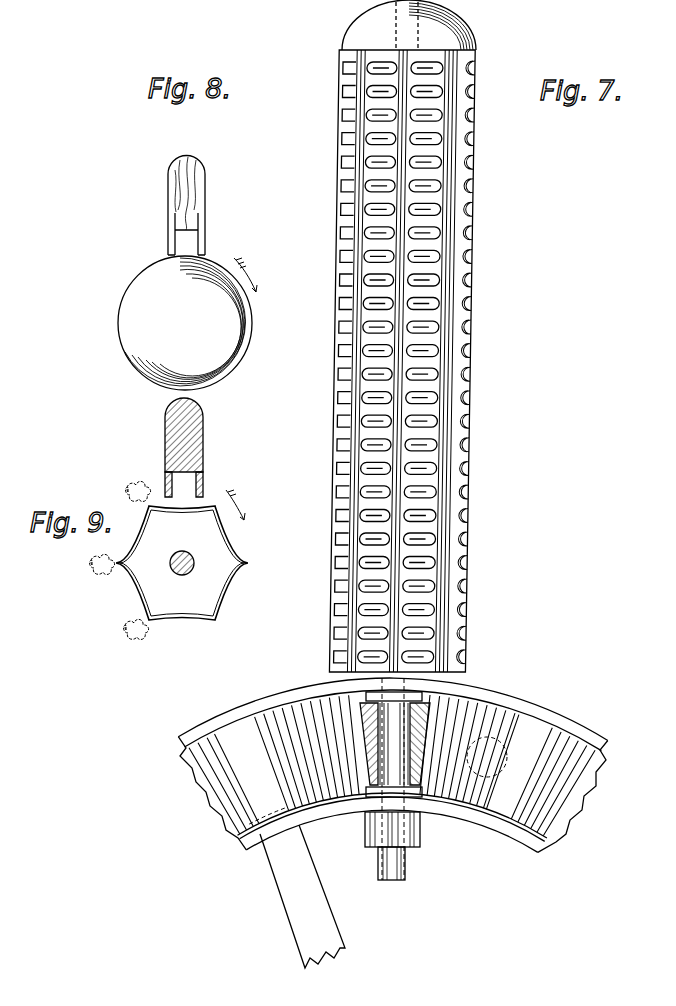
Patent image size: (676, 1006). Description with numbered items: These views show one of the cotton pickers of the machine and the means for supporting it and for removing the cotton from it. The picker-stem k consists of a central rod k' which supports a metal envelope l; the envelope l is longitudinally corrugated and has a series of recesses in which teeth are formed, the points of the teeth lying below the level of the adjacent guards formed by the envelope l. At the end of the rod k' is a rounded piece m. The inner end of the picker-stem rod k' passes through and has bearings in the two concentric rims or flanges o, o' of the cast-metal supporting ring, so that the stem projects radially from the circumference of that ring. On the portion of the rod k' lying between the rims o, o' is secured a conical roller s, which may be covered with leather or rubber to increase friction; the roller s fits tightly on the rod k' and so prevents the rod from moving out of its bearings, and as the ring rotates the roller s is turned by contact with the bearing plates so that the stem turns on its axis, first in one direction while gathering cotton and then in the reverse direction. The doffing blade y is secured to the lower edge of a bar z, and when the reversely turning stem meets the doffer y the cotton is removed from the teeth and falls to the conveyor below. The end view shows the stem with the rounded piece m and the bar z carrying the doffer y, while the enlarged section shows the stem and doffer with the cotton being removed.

In FIG. 7, the rounded piece m is at (409, 25).
In FIG. 8, the rounded piece m is at (185, 323).
In FIG. 7, the picker-stem k is at (415, 361).
In FIG. 8, the picker-stem k is at (255, 286).
In FIG. 7, the metal envelope l is at (372, 562).
In FIG. 9, the metal envelope l is at (248, 563).
In FIG. 7, the rim or flange o is at (393, 765).
In FIG. 7, the rim or flange o' is at (392, 882).
In FIG. 7, the central rod k' is at (395, 791).
In FIG. 9, the central rod k' is at (190, 568).
In FIG. 7, the ring slots z' is at (392, 765).
In FIG. 7, the conical roller s is at (468, 751).
In FIG. 8, the bar z is at (178, 205).
In FIG. 9, the bar z is at (175, 435).
In FIG. 8, the doffing blade y is at (192, 234).
In FIG. 9, the doffing blade y is at (189, 484).